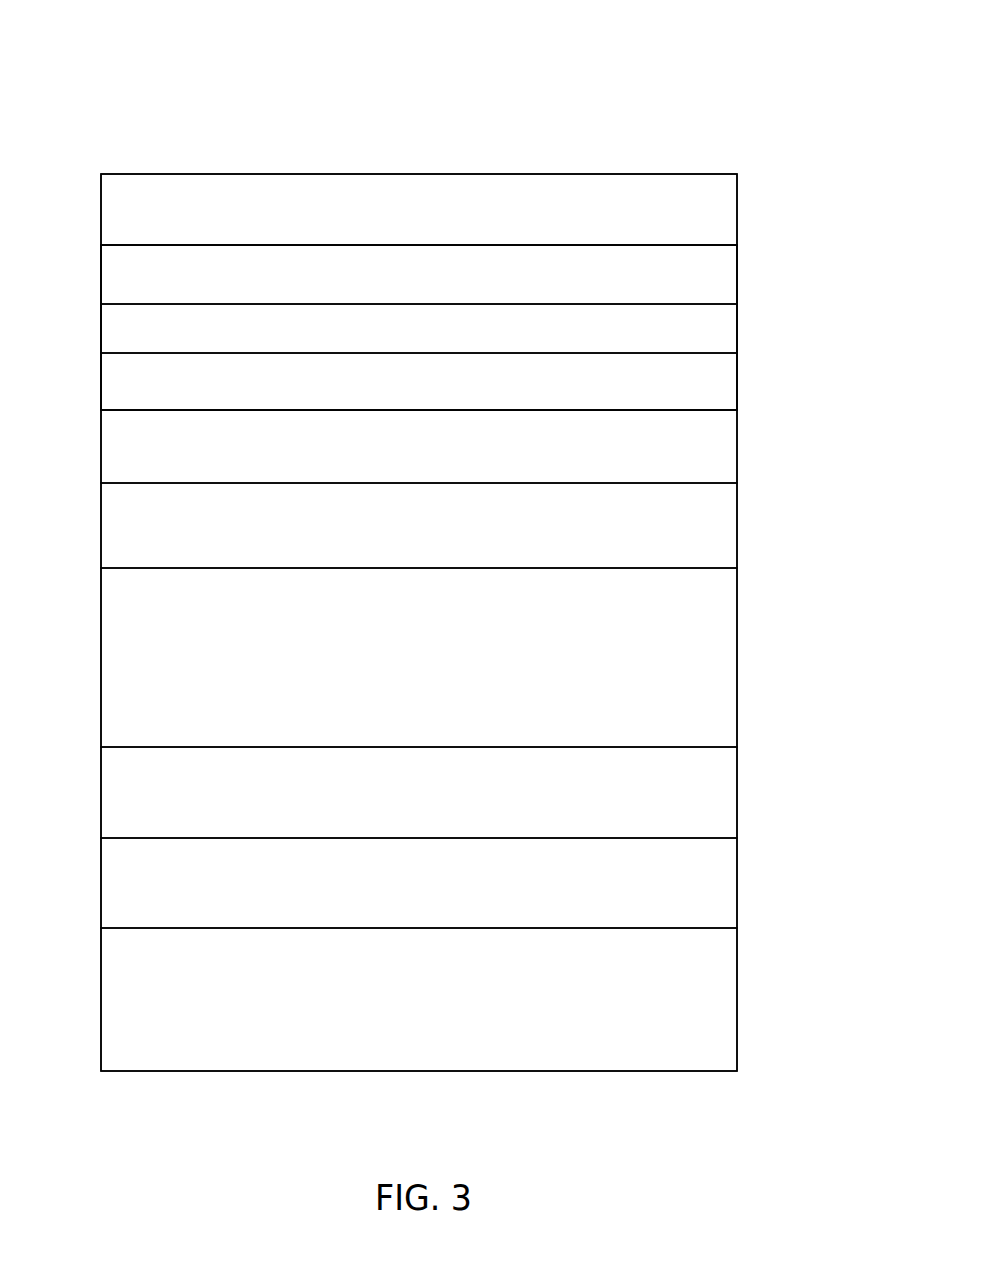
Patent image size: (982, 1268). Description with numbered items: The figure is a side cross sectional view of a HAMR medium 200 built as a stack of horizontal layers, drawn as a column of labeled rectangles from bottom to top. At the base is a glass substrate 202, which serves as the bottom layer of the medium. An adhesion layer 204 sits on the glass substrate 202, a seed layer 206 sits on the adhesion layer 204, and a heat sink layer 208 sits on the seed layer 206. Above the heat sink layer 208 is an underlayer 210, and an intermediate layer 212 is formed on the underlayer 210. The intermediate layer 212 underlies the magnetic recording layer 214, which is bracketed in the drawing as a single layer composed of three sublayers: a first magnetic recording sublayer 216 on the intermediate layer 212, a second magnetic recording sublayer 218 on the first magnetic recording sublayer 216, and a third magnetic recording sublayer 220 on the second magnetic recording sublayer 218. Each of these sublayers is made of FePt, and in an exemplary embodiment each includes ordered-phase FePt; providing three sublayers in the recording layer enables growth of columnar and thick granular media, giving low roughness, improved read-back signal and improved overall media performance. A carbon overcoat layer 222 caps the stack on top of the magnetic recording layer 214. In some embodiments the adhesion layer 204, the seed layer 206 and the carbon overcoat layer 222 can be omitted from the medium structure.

The HAMR medium 200 is at (131, 66).
The glass substrate 202 is at (737, 995).
The adhesion layer 204 is at (737, 880).
The seed layer 206 is at (737, 790).
The heat sink layer 208 is at (737, 655).
The underlayer 210 is at (737, 520).
The intermediate layer 212 is at (737, 458).
The magnetic recording layer 214 is at (745, 245).
The first magnetic recording sublayer 216 is at (101, 380).
The second magnetic recording sublayer 218 is at (101, 325).
The third magnetic recording sublayer 220 is at (101, 272).
The carbon overcoat layer 222 is at (737, 200).